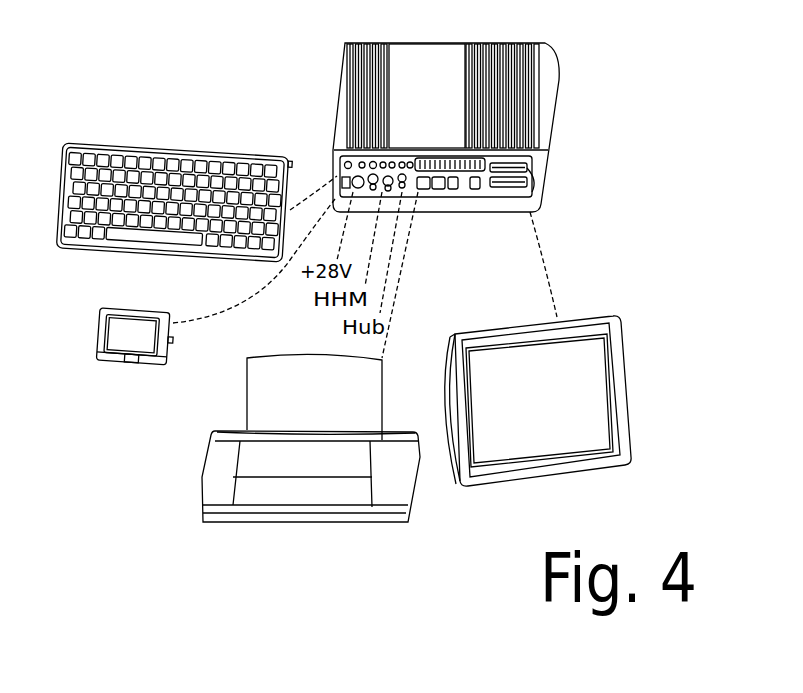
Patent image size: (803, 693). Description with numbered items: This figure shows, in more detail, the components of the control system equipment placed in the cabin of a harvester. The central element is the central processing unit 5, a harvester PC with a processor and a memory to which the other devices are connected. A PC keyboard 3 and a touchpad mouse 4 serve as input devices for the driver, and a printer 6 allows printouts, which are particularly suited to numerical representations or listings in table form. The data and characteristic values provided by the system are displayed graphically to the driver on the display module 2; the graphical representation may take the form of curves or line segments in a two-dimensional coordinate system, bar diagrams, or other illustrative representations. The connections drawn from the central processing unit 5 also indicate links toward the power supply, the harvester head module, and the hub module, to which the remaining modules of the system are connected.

The display module 2 is at (538, 401).
The PC keyboard 3 is at (174, 192).
The touchpad mouse 4 is at (135, 354).
The central processing unit 5 is at (446, 127).
The printer 6 is at (311, 438).